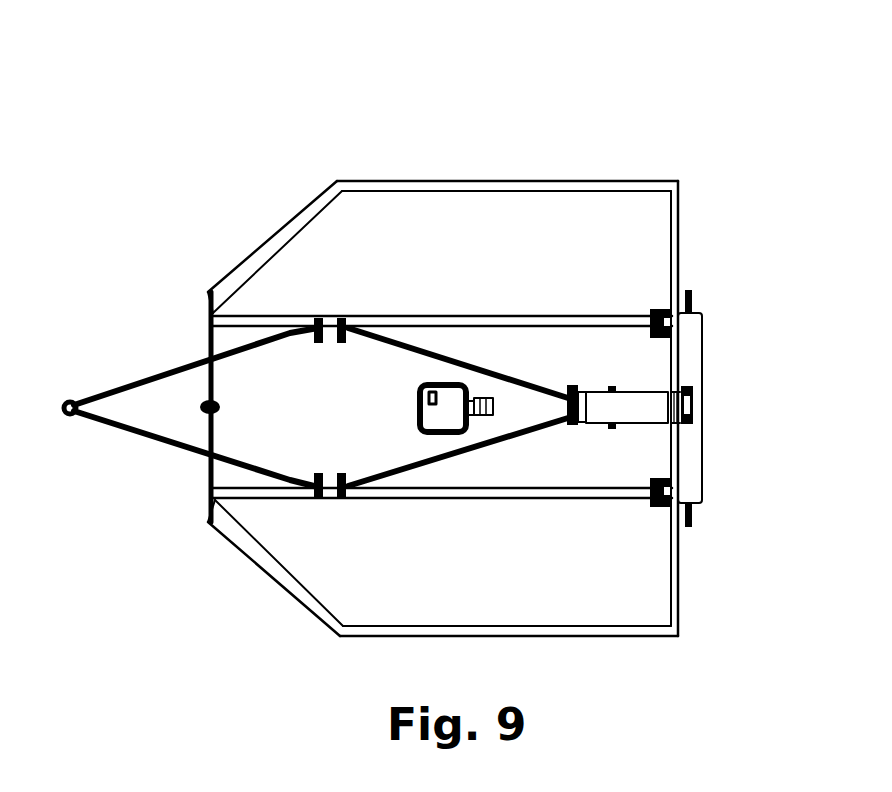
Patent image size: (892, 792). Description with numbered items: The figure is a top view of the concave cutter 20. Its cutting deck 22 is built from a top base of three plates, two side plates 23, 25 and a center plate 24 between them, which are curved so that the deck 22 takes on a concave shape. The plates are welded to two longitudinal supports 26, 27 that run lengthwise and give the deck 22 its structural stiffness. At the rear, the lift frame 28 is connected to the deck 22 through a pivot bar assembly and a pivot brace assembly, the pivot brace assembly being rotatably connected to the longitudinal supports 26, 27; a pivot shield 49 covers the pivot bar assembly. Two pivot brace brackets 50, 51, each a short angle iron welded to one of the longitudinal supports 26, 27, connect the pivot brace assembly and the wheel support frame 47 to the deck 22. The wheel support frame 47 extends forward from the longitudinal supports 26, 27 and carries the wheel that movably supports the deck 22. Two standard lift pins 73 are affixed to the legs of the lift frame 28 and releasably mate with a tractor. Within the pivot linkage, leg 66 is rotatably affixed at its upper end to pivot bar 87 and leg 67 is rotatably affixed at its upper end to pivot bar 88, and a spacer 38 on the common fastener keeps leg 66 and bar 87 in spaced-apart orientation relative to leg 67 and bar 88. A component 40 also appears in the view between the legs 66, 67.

The concave cutter 20 is at (684, 134).
The cutting deck 22 is at (332, 249).
The side plate 23 is at (537, 257).
The center plate 24 is at (582, 358).
The side plate 25 is at (462, 607).
The longitudinal support 26 is at (453, 491).
The longitudinal support 27 is at (453, 324).
The lift frame 28 is at (694, 348).
The spacer 38 is at (577, 400).
The battery 40 is at (418, 419).
The wheel support frame 47 is at (147, 372).
The pivot shield 49 is at (607, 420).
The pivot brace bracket 50 is at (343, 500).
The pivot brace bracket 51 is at (325, 325).
The leg 66 is at (480, 367).
The leg 67 is at (480, 446).
The lift pins 73 is at (692, 300).
The pivot bar 87 is at (587, 393).
The pivot bar 88 is at (583, 421).